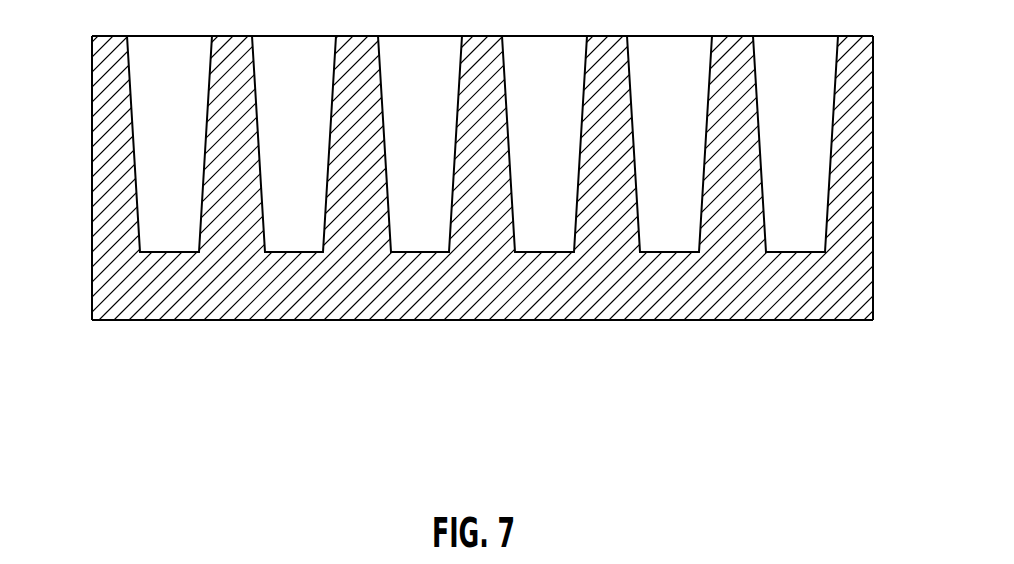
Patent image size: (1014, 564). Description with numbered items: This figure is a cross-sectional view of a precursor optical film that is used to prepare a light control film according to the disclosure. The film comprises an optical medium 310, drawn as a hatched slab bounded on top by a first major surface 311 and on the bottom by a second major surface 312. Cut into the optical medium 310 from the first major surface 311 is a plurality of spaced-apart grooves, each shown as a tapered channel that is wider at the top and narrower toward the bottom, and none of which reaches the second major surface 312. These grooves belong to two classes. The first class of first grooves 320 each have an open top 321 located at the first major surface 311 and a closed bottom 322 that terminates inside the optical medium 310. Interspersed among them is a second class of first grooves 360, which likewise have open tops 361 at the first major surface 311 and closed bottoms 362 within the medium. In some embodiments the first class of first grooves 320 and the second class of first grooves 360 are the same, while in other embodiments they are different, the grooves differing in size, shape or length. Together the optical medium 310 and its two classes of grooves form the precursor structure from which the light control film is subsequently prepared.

The optical medium 310 is at (113, 298).
The first major surface 311 is at (855, 36).
The second major surface 312 is at (860, 322).
The first class of first grooves 320 is at (187, 259).
The open top 321 is at (152, 36).
The closed bottom 322 is at (162, 254).
The second class of first grooves 360 is at (434, 261).
The open top 361 is at (402, 36).
The closed bottom 362 is at (413, 254).